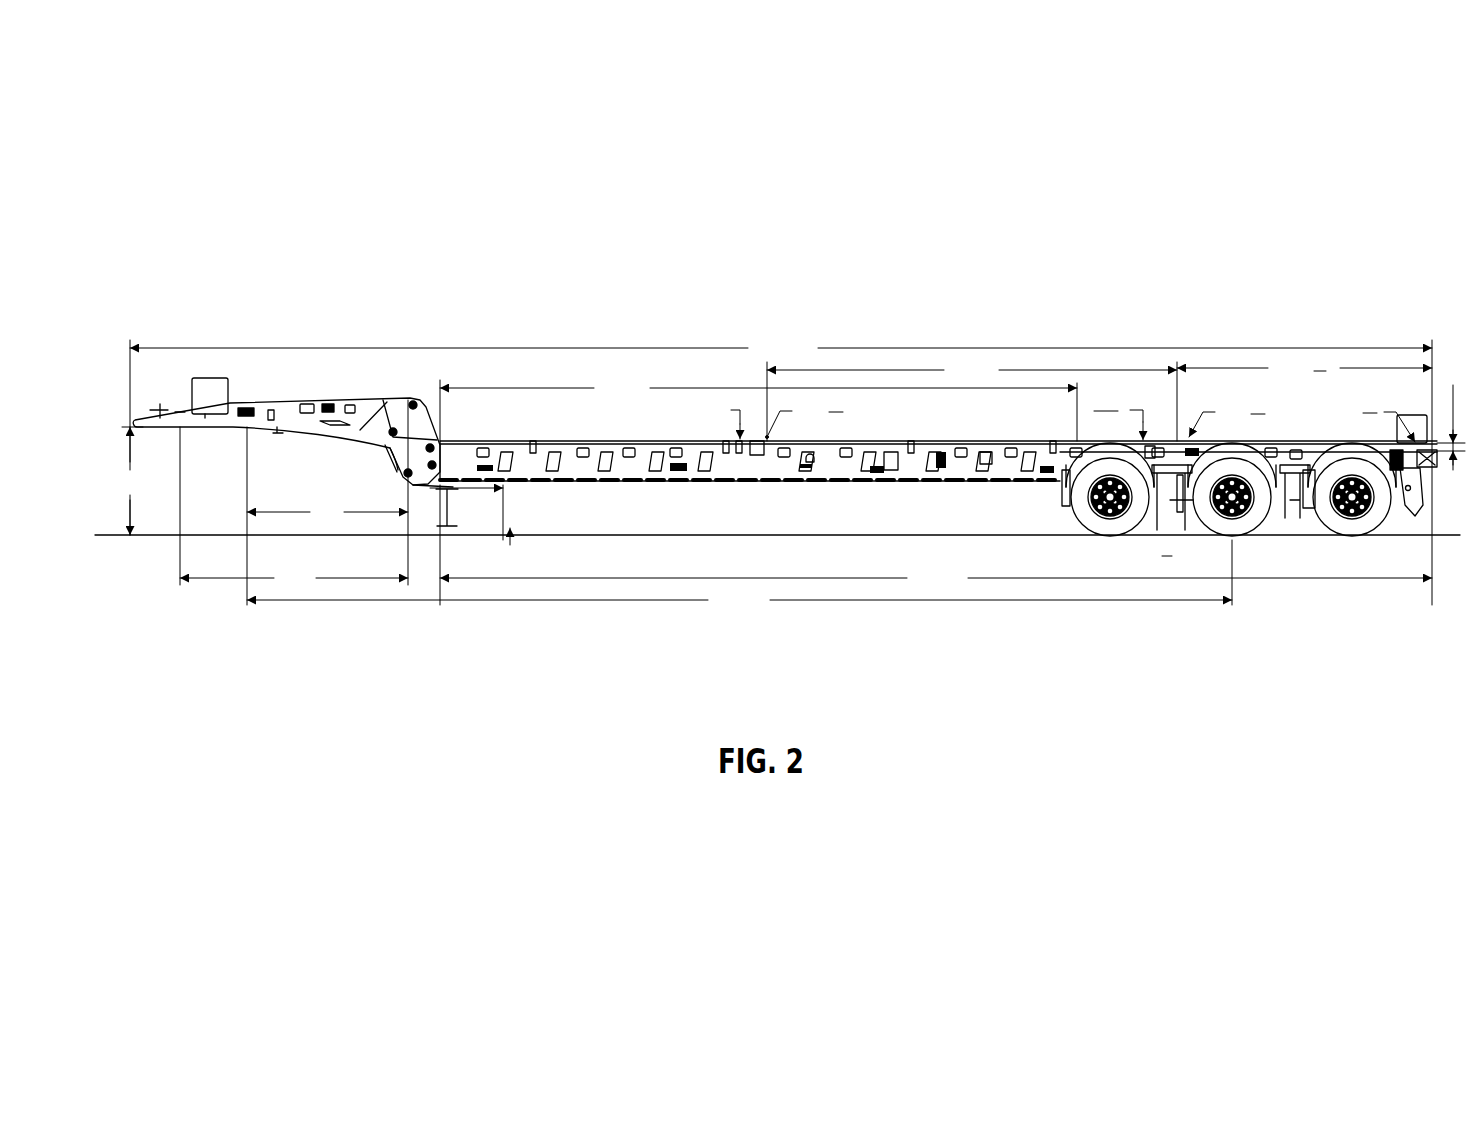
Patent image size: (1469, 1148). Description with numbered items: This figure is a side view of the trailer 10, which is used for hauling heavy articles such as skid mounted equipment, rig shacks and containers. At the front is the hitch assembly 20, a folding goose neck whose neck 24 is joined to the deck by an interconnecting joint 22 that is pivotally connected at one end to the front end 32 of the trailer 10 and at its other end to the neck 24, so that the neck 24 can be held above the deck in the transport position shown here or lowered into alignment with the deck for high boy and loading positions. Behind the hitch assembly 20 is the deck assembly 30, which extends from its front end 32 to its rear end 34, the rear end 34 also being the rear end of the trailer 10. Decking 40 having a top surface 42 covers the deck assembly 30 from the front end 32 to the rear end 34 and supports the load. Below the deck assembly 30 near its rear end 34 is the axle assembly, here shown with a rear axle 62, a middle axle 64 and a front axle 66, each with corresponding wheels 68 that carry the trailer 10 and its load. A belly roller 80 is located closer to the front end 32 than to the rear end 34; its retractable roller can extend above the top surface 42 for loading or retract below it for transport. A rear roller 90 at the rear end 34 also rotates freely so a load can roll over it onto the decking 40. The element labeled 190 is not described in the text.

The trailer 10 is at (782, 505).
The hitch assembly 20 is at (313, 397).
The interconnecting joint 22 is at (385, 442).
The neck 24 is at (280, 430).
The deck assembly 30 is at (640, 462).
The front end of the deck assembly 32 is at (438, 437).
The rear end of the deck assembly 34 is at (1415, 415).
The decking 40 is at (585, 440).
The top surface 42 is at (890, 440).
The rear axle 62 is at (1352, 505).
The middle axle 64 is at (1232, 505).
The front axle 66 is at (1110, 505).
The wheels 68 is at (1113, 470).
The belly roller 80 is at (762, 440).
The rear roller 90 is at (1430, 452).
The suspension hanger 190 is at (1140, 475).